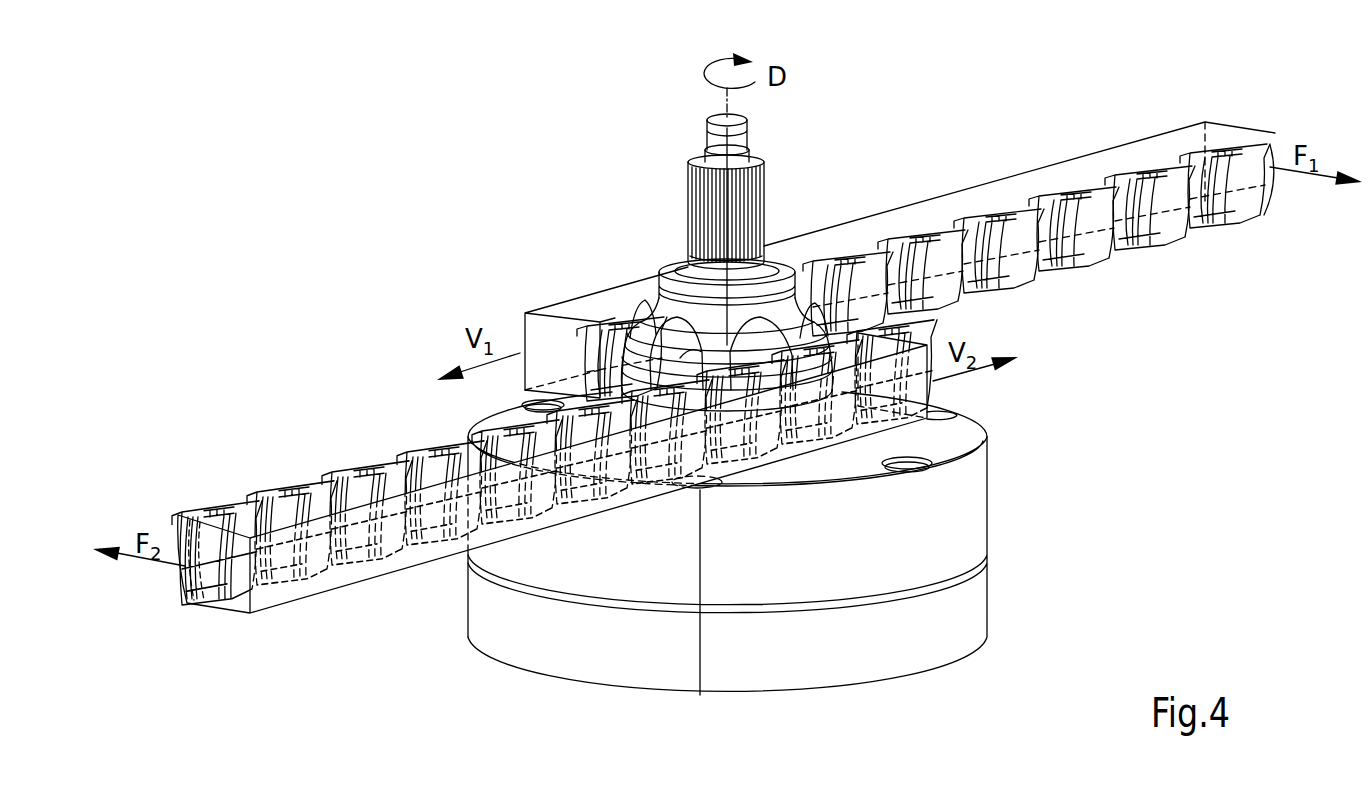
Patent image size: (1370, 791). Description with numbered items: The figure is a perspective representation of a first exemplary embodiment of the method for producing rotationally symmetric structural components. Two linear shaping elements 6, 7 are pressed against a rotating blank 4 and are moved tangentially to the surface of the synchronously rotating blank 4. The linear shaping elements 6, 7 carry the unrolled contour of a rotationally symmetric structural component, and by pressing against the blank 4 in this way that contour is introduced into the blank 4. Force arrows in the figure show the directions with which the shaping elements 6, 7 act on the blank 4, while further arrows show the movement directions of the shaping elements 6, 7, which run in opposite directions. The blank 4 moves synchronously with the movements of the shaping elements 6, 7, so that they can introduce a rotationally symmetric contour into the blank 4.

The blank 4 is at (657, 308).
The linear shaping element 6 is at (233, 598).
The linear shaping element 7 is at (1085, 170).